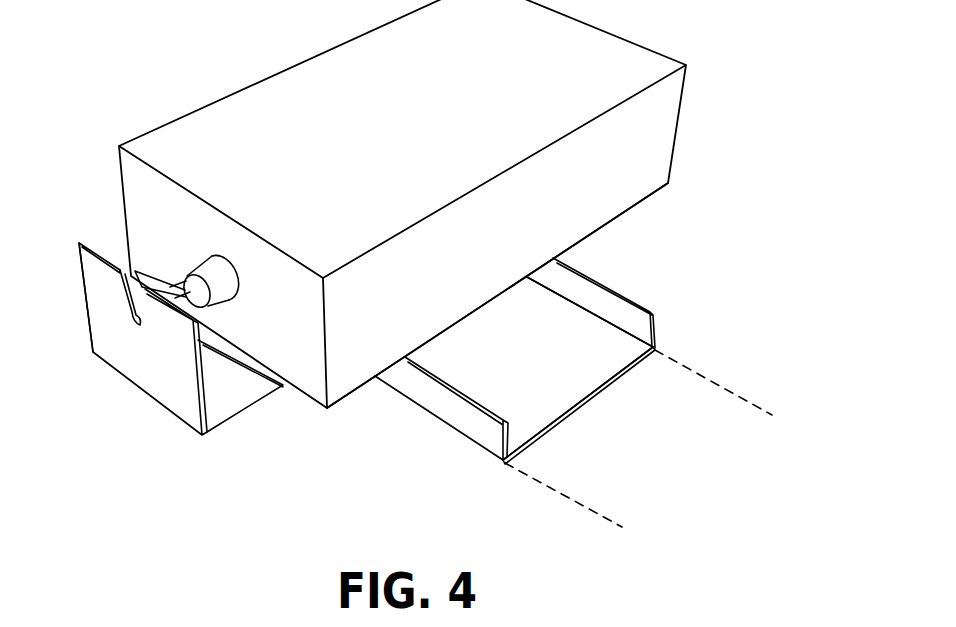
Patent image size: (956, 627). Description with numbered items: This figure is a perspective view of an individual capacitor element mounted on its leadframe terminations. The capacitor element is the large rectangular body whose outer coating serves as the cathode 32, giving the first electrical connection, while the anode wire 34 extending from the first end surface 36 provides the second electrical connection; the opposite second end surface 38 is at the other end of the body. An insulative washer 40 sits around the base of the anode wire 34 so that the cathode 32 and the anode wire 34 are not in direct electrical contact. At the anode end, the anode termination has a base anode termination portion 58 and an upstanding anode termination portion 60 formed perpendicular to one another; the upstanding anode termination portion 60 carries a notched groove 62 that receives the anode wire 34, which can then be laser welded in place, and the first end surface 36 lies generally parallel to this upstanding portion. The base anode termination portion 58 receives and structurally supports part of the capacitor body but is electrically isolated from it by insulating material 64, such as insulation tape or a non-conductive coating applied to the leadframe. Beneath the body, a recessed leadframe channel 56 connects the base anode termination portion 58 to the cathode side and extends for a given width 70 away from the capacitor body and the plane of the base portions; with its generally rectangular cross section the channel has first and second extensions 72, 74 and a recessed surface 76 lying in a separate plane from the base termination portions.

The cathode 32 is at (643, 175).
The anode wire 34 is at (182, 288).
The first end surface 36 is at (313, 398).
The second end surface 38 is at (687, 113).
The insulative washer 40 is at (210, 272).
The recessed leadframe channel 56 is at (562, 382).
The base anode termination portion 58 is at (225, 400).
The upstanding anode termination portion 60 is at (102, 333).
The notched groove 62 is at (136, 324).
The insulating material 64 is at (270, 377).
The width 70 is at (742, 400).
The first extension 72 is at (470, 422).
The second extension 74 is at (633, 320).
The recessed surface 76 is at (547, 335).